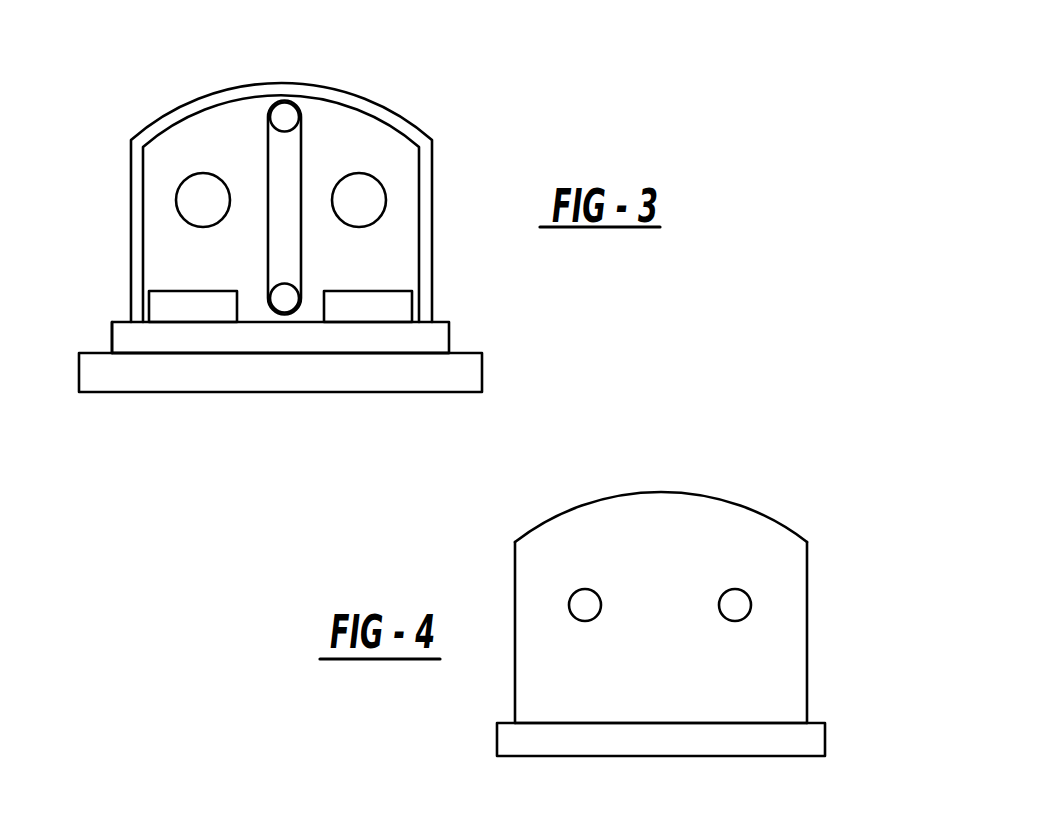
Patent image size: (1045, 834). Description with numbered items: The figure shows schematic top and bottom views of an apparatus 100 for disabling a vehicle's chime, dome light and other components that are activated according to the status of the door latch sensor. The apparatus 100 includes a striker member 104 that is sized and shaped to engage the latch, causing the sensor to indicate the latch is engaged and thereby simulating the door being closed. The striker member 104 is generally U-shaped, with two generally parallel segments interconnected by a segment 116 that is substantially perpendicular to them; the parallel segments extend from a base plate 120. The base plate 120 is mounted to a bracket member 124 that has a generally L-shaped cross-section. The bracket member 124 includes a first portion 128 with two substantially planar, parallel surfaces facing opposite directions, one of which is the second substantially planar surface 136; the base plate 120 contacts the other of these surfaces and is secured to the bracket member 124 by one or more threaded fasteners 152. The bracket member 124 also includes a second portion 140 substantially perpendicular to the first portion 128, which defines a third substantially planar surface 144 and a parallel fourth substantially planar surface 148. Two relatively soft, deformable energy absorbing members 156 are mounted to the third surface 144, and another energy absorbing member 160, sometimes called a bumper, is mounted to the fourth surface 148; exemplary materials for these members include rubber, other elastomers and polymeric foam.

In FIG. 3, the apparatus 100 is at (400, 88).
In FIG. 4, the apparatus 100 is at (852, 480).
In FIG. 3, the striker member 104 is at (238, 161).
In FIG. 3, the segment 116 is at (283, 160).
In FIG. 3, the base plate 120 is at (280, 202).
In FIG. 3, the bracket member 124 is at (131, 169).
In FIG. 4, the bracket member 124 is at (682, 607).
In FIG. 4, the first portion 128 is at (548, 552).
In FIG. 4, the second substantially planar surface 136 is at (682, 607).
In FIG. 3, the second portion 140 is at (440, 337).
In FIG. 3, the third substantially planar surface 144 is at (119, 322).
In FIG. 3, the fourth substantially planar surface 148 is at (325, 353).
In FIG. 4, the fourth substantially planar surface 148 is at (680, 723).
In FIG. 3, the threaded fasteners 152 is at (188, 187).
In FIG. 4, the threaded fasteners 152 is at (660, 605).
In FIG. 3, the energy absorbing members 156 is at (190, 305).
In FIG. 3, the energy absorbing member 160 is at (475, 372).
In FIG. 4, the energy absorbing member 160 is at (815, 738).